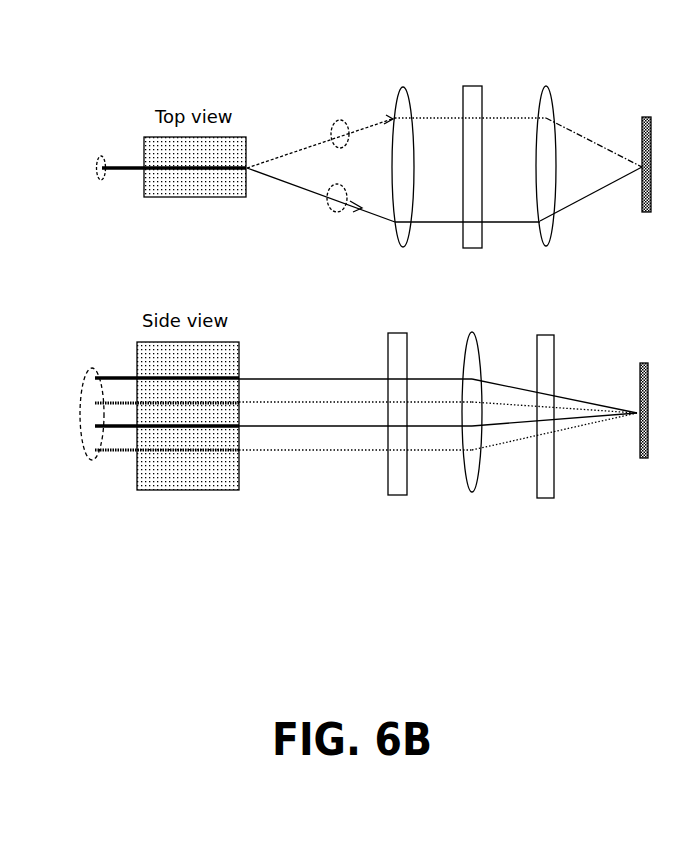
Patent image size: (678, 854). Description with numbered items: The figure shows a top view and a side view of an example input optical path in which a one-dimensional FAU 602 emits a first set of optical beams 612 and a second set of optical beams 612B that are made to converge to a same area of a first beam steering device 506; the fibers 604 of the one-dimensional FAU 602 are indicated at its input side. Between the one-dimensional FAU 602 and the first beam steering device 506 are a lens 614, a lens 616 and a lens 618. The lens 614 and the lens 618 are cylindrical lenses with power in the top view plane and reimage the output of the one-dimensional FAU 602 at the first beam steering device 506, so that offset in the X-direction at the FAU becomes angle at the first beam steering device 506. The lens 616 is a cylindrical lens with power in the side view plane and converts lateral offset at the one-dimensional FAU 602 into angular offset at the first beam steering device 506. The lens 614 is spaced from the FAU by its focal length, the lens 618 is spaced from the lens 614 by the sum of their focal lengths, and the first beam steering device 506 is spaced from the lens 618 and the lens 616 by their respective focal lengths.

The first beam steering device 506 is at (651, 179).
The 1D FAU 602 is at (142, 183).
The optical fiber 604 is at (95, 166).
The first set of optical beams 612 is at (340, 213).
The second set of optical beams 612B is at (338, 121).
The lens 614 is at (402, 182).
The lens 616 is at (477, 182).
The lens 618 is at (545, 182).